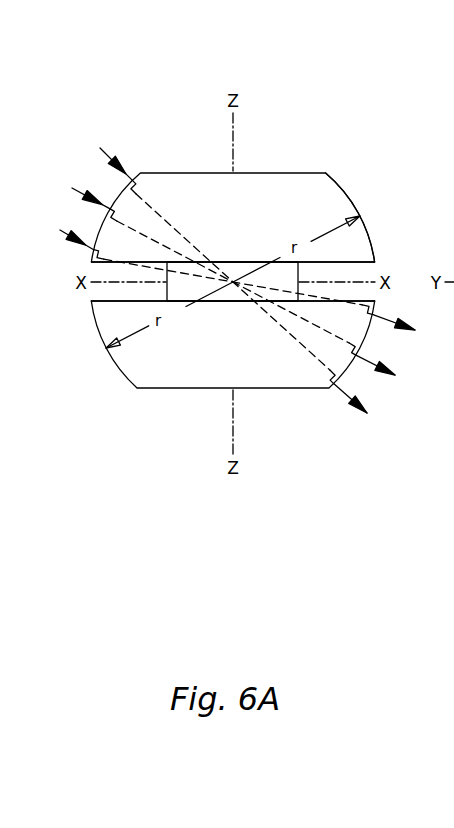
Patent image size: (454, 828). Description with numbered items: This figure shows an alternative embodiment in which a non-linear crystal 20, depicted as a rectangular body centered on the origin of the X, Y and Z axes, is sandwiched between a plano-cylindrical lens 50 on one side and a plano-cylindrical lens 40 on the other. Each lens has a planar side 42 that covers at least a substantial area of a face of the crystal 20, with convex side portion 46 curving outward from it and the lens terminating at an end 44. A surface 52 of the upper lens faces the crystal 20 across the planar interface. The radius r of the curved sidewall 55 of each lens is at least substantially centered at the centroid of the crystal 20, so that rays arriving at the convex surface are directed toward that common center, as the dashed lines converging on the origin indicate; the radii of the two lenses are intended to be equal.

The non-linear crystal 20 is at (240, 302).
The plano-cylindrical lens 40 is at (180, 357).
The planar side 42 is at (352, 297).
The end 44 is at (224, 362).
The convex side portion 46 is at (349, 192).
The plano-cylindrical lens 50 is at (272, 205).
The lower surface of upper body portion 52 is at (352, 268).
The convex sidewall 55 is at (113, 203).